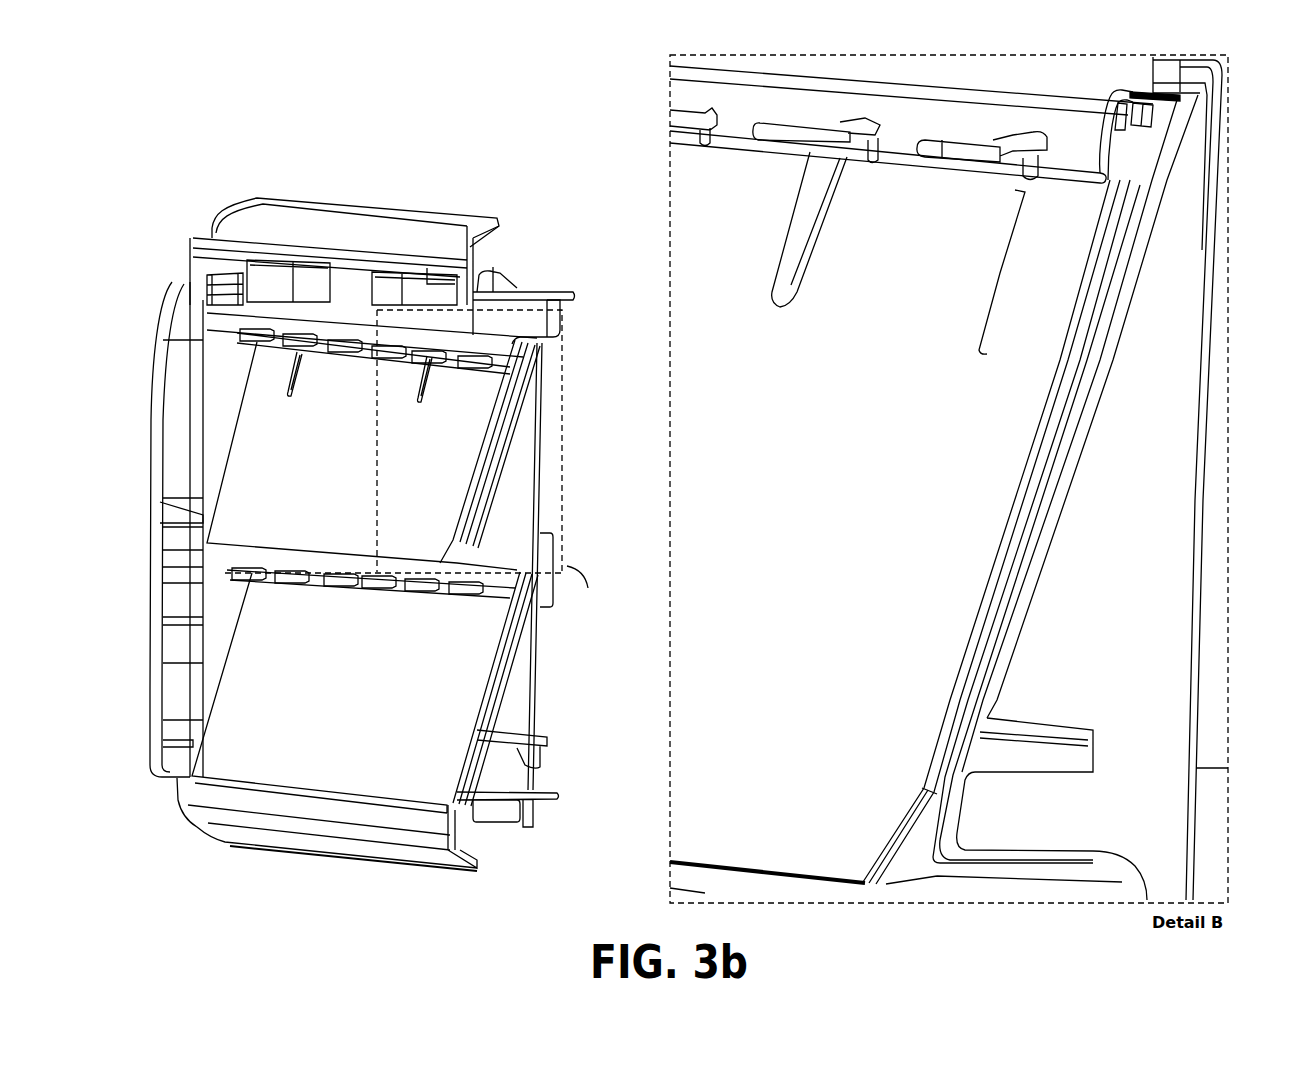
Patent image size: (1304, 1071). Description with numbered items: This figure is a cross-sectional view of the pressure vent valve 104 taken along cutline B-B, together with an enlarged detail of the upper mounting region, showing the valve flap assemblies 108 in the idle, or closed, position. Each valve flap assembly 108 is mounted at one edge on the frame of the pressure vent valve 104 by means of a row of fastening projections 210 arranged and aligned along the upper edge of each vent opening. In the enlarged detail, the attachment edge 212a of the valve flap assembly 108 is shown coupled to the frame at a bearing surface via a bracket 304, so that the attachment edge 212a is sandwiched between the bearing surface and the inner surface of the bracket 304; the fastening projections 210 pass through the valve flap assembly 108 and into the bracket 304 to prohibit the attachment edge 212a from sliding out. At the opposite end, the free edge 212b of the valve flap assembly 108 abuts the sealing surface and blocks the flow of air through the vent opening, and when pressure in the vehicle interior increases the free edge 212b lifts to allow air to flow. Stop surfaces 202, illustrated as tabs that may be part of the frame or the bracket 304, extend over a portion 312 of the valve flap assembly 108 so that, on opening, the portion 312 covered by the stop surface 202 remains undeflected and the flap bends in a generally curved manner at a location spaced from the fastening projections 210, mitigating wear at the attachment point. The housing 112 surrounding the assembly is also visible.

The pressure vent valve 104 is at (215, 142).
The housing 112 is at (428, 223).
The valve flap assembly 108 is at (330, 499).
The stop surface 202 is at (287, 392).
The bracket 304 is at (493, 373).
The fastening projection 210 is at (760, 128).
The portion of the valve flap assembly 312 is at (1000, 273).
The attachment edge 212a is at (1165, 124).
The free edge 212b is at (882, 892).